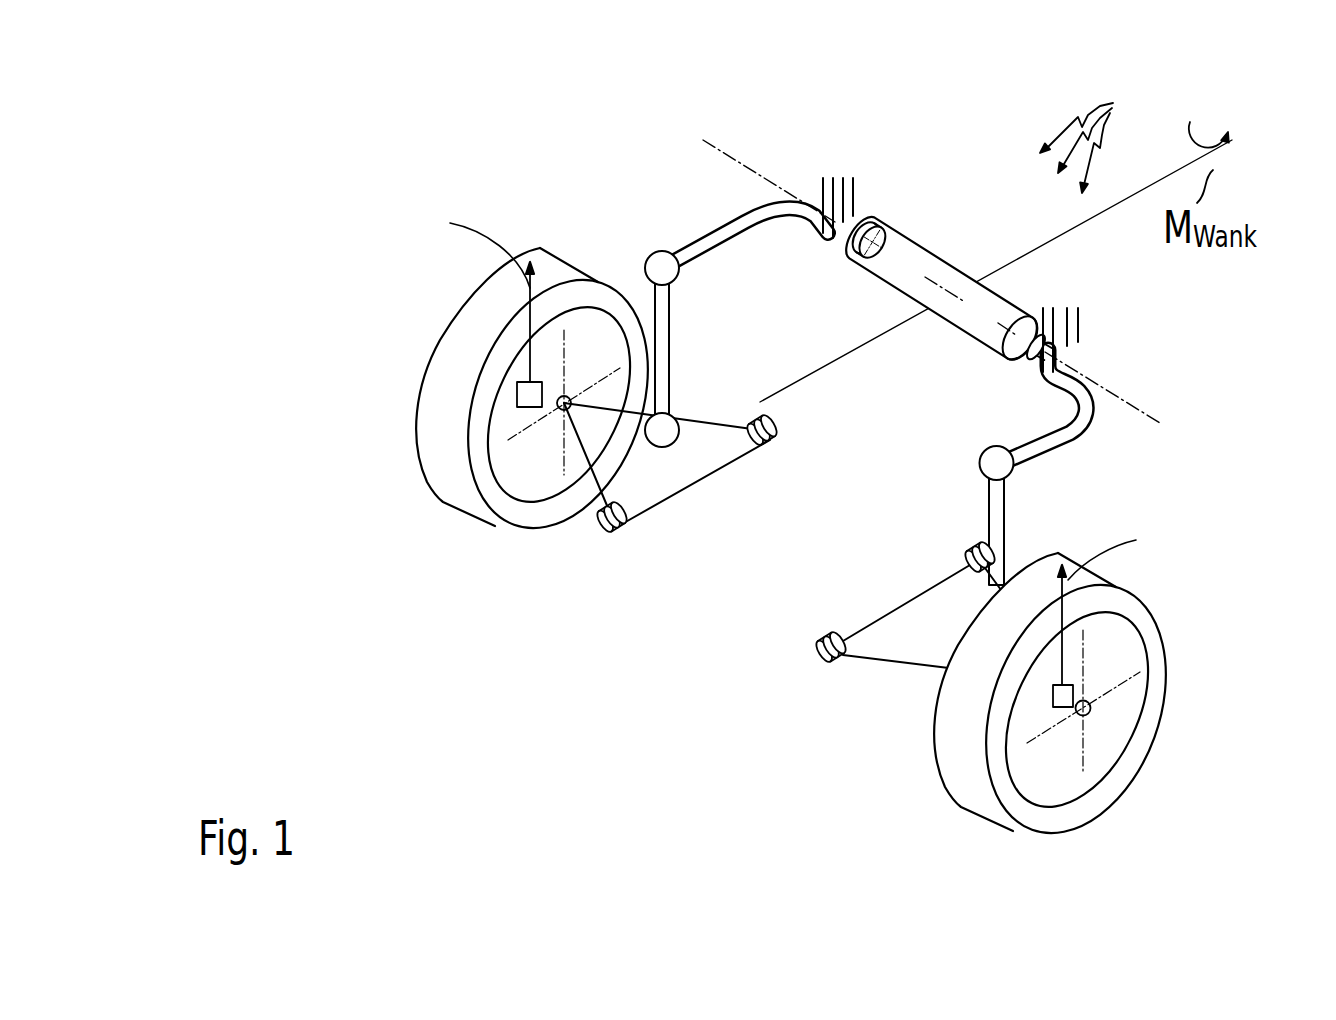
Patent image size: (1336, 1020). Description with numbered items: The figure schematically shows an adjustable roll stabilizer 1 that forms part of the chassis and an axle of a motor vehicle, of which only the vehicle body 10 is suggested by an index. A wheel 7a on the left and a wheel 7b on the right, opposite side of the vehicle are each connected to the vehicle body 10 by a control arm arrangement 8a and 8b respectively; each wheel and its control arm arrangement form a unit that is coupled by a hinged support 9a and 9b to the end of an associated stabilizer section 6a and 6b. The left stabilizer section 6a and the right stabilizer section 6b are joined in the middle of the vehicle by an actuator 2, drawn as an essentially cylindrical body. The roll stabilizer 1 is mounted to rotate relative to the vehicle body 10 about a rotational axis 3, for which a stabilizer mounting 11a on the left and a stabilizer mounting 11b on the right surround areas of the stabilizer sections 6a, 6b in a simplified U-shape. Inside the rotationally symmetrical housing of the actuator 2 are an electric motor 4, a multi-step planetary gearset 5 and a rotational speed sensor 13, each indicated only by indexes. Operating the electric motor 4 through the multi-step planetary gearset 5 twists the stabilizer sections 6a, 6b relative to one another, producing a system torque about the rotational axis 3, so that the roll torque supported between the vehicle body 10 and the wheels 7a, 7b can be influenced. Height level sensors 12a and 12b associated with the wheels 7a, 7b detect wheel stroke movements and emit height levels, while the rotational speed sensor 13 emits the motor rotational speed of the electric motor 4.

The adjustable roll stabilizer 1 is at (1085, 138).
The actuator 2 is at (945, 260).
The rotational axis 3 is at (1113, 390).
The electric motor 4 is at (913, 283).
The multi-step planetary gearset 5 is at (993, 333).
The stabilizer section 6a is at (790, 213).
The stabilizer section 6b is at (1043, 440).
The wheel 7a is at (457, 485).
The wheel 7b is at (1108, 786).
The control arm arrangement 8a is at (677, 465).
The control arm arrangement 8b is at (887, 642).
The hinged support 9a is at (660, 342).
The hinged support 9b is at (997, 513).
The vehicle body 10 is at (897, 423).
The stabilizer mounting 11a is at (852, 193).
The stabilizer mounting 11b is at (1080, 327).
The height level sensor 12a is at (527, 393).
The height level sensor 12b is at (1063, 697).
The rotational speed sensor 13 is at (880, 222).